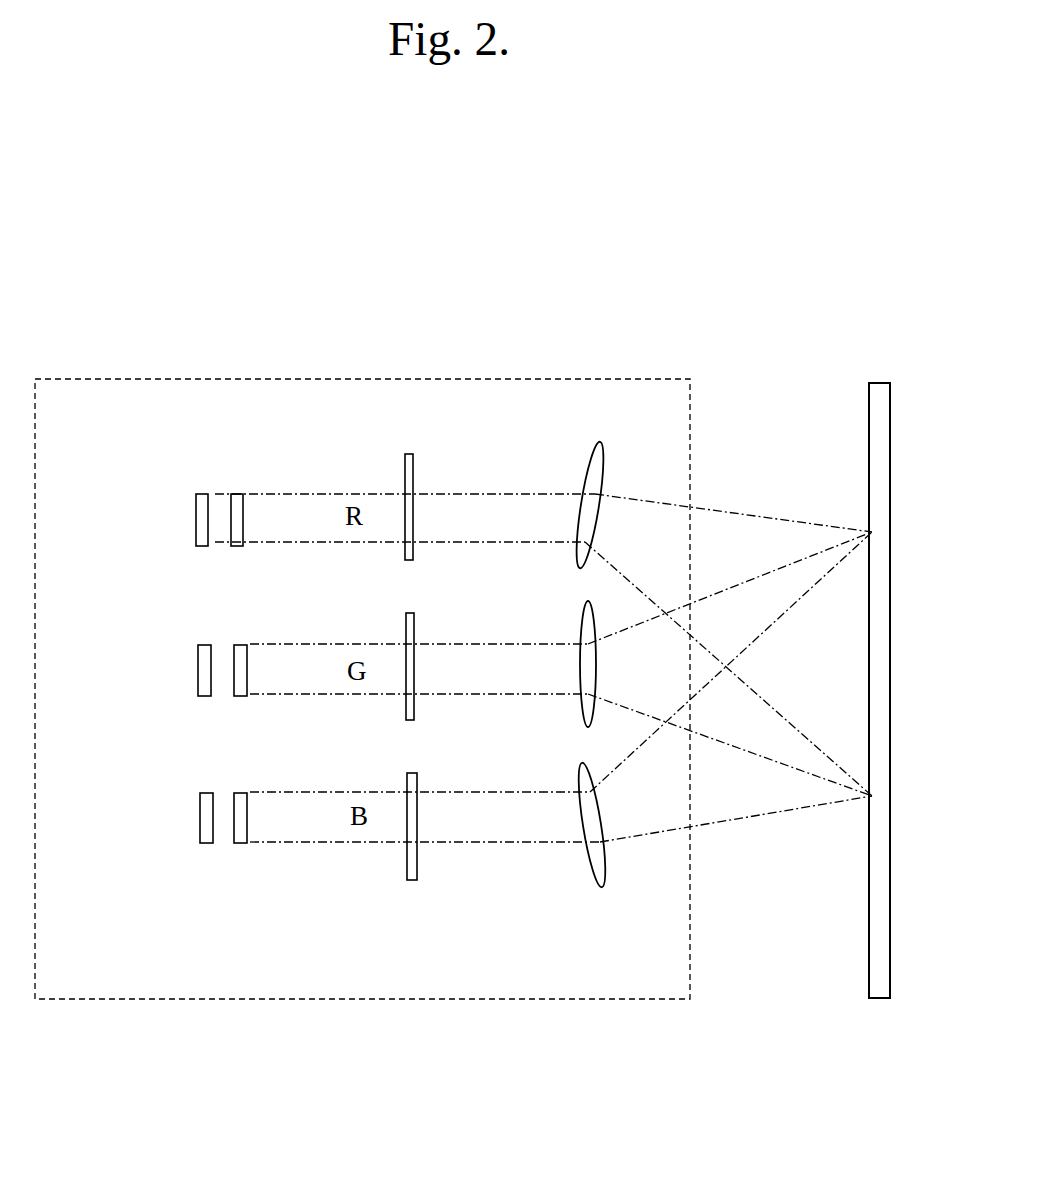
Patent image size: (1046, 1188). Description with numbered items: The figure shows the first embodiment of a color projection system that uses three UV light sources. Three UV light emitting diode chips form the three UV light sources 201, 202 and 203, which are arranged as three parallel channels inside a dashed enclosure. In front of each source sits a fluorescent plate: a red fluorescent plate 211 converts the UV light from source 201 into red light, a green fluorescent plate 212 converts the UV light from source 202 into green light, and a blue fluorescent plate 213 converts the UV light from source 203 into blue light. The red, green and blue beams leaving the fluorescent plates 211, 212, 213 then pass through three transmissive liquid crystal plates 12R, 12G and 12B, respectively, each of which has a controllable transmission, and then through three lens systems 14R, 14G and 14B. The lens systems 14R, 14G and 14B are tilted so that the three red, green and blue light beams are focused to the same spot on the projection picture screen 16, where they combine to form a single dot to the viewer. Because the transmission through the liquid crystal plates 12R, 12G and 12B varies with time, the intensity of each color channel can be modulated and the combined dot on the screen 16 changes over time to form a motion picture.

The projection picture screen 16 is at (869, 433).
The UV light source 201 is at (195, 507).
The UV light source 202 is at (197, 669).
The UV light source 203 is at (199, 835).
The red fluorescent plate 211 is at (232, 493).
The green fluorescent plate 212 is at (235, 643).
The blue fluorescent plate 213 is at (240, 792).
The transmissive liquid crystal plate 12R is at (400, 463).
The transmissive liquid crystal plate 12G is at (405, 627).
The transmissive liquid crystal plate 12B is at (405, 778).
The lens system 14R is at (595, 465).
The lens system 14G is at (580, 625).
The lens system 14B is at (578, 777).